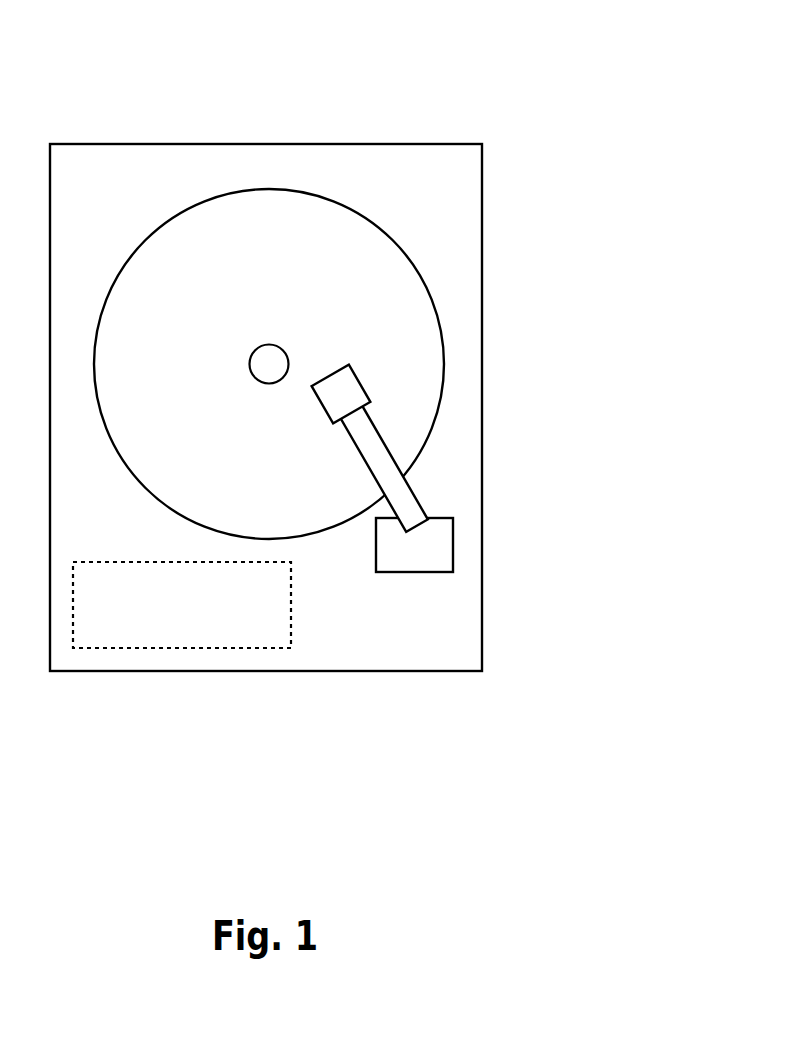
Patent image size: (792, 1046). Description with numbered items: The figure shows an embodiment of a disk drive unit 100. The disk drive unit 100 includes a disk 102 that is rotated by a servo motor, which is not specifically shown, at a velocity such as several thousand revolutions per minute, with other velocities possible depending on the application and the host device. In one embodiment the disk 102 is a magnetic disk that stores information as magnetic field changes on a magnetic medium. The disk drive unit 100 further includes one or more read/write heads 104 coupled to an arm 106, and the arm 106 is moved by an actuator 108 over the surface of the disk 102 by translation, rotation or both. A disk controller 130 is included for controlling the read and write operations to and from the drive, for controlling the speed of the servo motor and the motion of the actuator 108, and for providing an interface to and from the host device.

The disk drive unit 100 is at (547, 82).
The disk 102 is at (158, 228).
The read/write head 104 is at (368, 398).
The arm 106 is at (392, 455).
The actuator 108 is at (376, 557).
The disk controller 130 is at (206, 635).